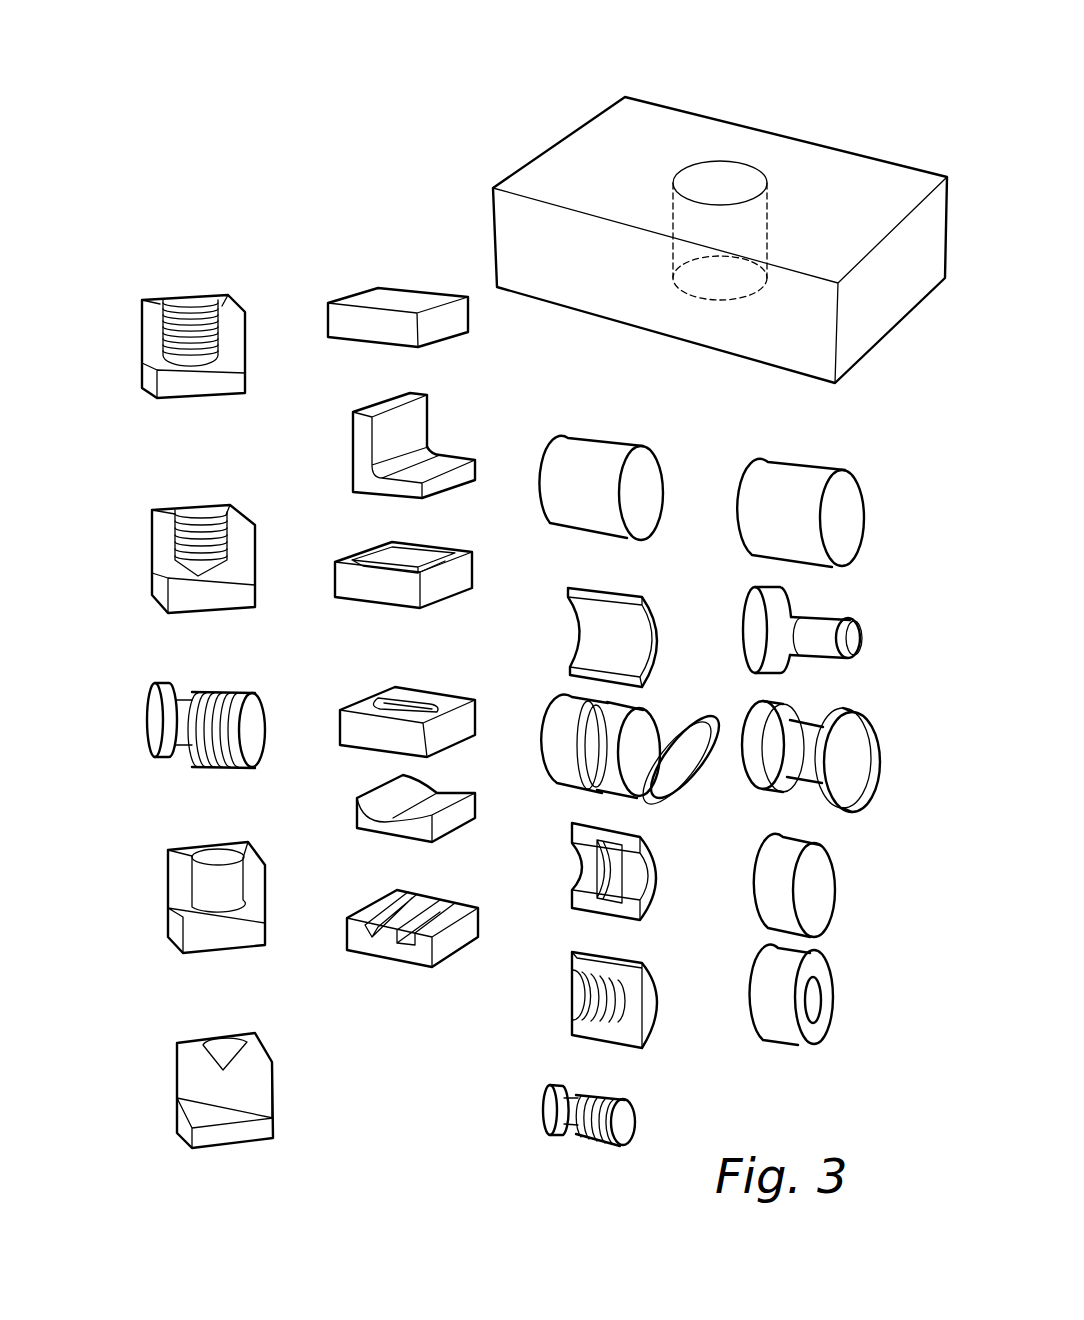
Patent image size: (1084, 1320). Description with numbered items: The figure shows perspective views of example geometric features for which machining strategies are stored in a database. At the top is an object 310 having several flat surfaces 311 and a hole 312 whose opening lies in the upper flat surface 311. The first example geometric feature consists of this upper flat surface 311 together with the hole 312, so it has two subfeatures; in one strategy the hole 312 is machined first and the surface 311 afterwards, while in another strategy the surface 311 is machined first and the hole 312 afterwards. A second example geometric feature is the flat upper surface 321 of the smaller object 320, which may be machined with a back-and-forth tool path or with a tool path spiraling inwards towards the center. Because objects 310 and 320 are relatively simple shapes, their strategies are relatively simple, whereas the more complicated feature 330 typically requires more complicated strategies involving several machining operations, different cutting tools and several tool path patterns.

The object 310 is at (568, 76).
The flat surface 311 is at (863, 176).
The hole 312 is at (725, 183).
The object 320 is at (426, 273).
The flat upper surface 321 is at (363, 298).
The geometric feature 330 is at (148, 1082).